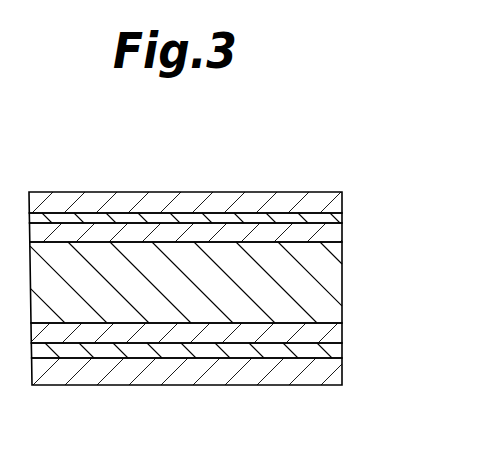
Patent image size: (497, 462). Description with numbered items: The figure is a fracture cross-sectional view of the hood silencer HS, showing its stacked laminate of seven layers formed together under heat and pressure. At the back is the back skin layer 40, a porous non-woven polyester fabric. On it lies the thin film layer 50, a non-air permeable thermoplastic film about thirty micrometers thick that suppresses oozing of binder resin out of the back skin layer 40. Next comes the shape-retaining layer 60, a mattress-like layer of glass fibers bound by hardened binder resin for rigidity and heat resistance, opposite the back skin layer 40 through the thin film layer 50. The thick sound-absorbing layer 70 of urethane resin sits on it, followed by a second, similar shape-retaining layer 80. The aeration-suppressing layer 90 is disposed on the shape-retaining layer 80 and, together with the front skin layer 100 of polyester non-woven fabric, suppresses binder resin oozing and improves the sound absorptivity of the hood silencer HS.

The hood silencer HS is at (366, 156).
The back skin layer 40 is at (342, 198).
The thin film layer 50 is at (343, 218).
The shape-retaining layer 60 is at (327, 233).
The sound-absorbing layer 70 is at (332, 282).
The shape-retaining layer 80 is at (333, 333).
The aeration-suppressing layer 90 is at (328, 350).
The front skin layer 100 is at (330, 367).